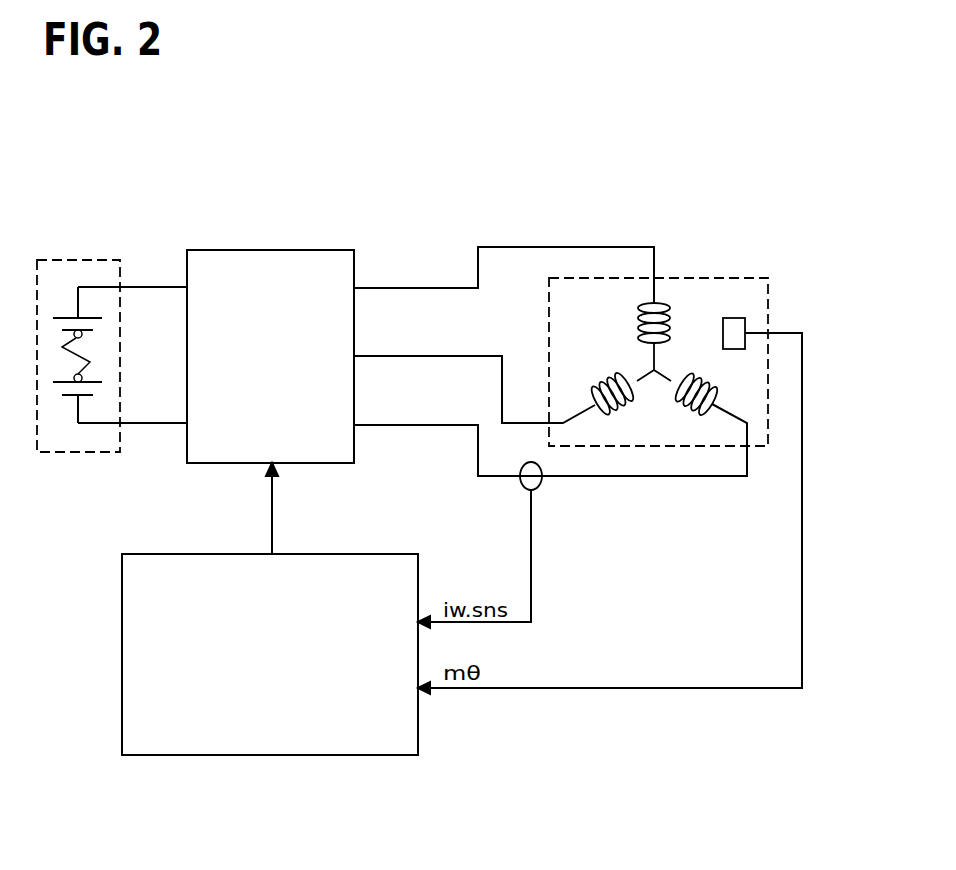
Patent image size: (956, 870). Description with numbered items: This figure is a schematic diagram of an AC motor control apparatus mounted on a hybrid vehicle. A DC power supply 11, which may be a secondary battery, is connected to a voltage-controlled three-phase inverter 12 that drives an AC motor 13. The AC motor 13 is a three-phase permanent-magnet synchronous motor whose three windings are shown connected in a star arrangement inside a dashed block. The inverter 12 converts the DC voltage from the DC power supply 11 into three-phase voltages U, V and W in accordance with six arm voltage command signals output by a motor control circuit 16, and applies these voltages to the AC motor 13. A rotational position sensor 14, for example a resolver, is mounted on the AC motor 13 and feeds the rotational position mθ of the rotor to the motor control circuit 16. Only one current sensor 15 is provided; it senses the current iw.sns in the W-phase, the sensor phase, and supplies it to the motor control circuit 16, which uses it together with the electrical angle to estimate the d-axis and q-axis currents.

The DC power supply 11 is at (72, 258).
The inverter 12 is at (272, 249).
The AC motor 13 is at (720, 278).
The rotational position sensor 14 is at (735, 318).
The current sensor 15 is at (543, 490).
The motor control circuit 16 is at (267, 755).